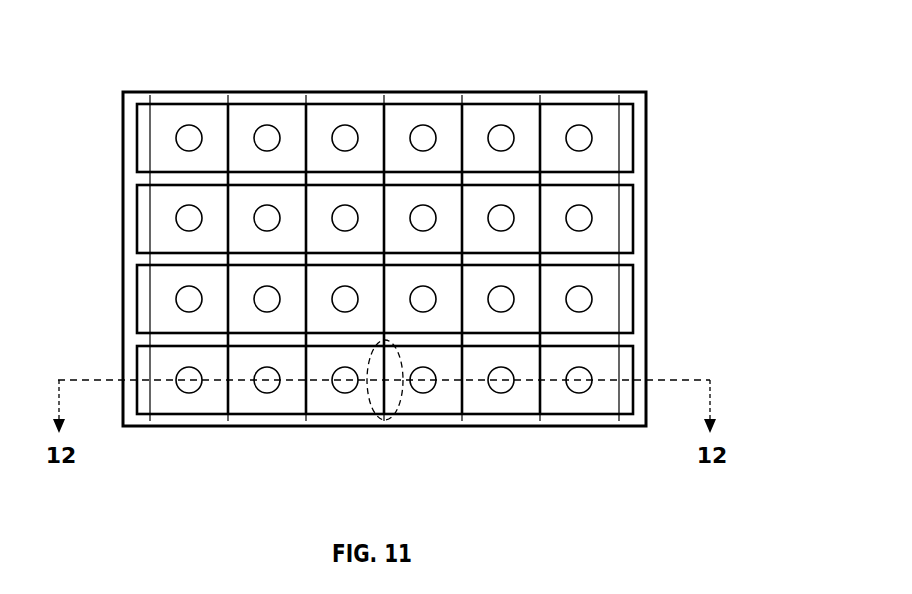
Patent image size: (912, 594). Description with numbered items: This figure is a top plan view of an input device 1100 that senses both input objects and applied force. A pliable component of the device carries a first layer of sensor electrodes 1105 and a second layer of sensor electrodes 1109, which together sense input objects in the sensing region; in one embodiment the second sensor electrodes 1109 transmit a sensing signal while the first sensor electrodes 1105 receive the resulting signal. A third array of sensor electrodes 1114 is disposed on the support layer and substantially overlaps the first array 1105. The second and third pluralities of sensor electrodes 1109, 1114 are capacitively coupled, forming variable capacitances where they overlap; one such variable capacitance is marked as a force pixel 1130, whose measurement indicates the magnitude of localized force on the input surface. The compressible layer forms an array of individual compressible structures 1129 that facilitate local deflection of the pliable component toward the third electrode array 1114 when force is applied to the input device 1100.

The input device 1100 is at (677, 57).
The first layer of sensor electrodes 1105 is at (233, 97).
The second layer of sensor electrodes 1109 is at (137, 364).
The third array of sensor electrodes 1114 is at (395, 420).
The compressible structures 1129 is at (588, 368).
The force pixel 1130 is at (370, 408).